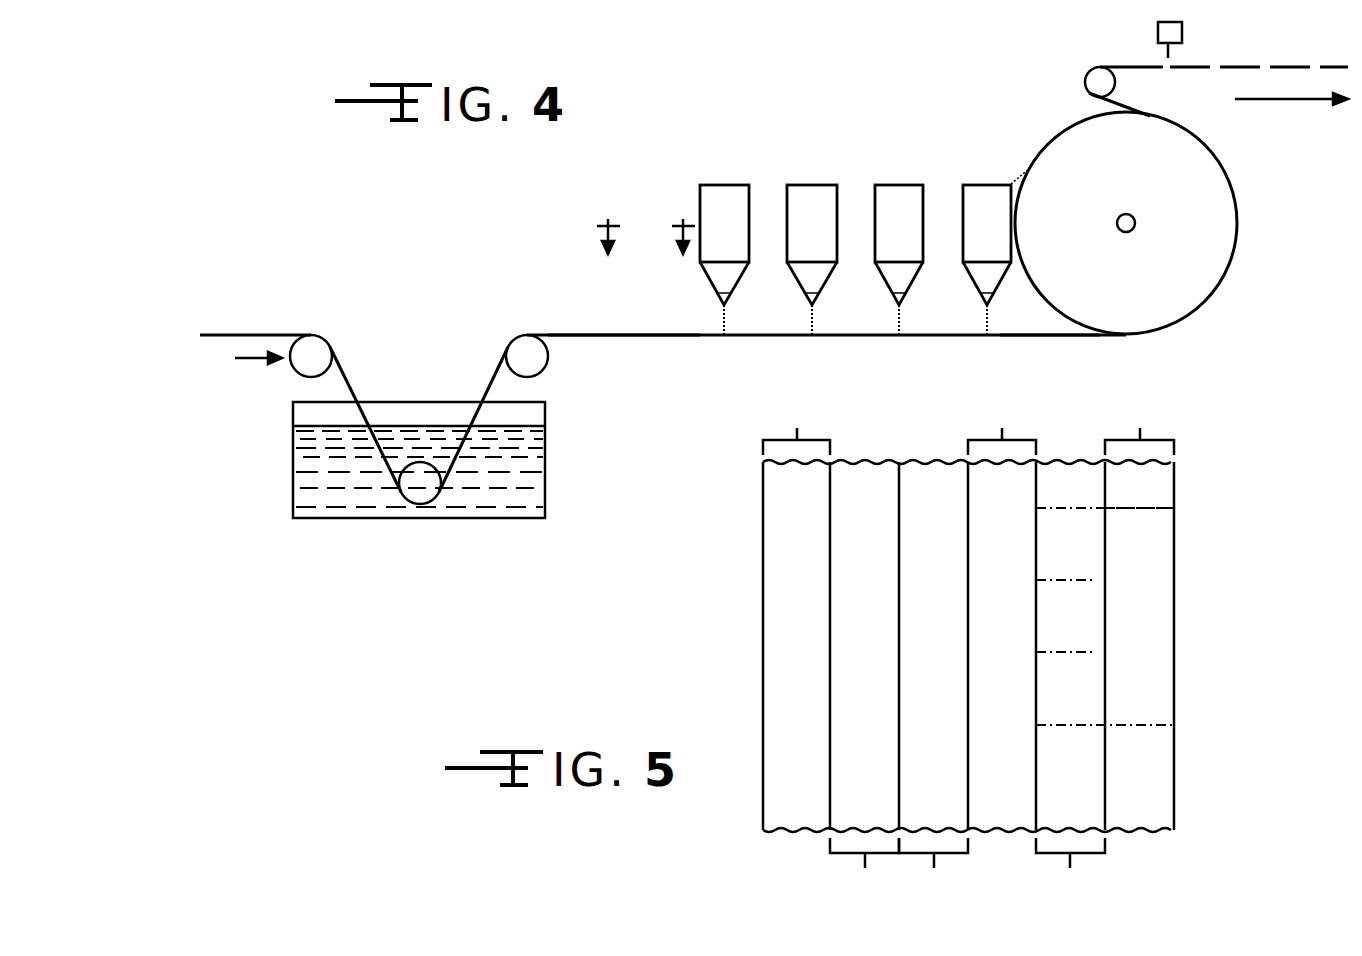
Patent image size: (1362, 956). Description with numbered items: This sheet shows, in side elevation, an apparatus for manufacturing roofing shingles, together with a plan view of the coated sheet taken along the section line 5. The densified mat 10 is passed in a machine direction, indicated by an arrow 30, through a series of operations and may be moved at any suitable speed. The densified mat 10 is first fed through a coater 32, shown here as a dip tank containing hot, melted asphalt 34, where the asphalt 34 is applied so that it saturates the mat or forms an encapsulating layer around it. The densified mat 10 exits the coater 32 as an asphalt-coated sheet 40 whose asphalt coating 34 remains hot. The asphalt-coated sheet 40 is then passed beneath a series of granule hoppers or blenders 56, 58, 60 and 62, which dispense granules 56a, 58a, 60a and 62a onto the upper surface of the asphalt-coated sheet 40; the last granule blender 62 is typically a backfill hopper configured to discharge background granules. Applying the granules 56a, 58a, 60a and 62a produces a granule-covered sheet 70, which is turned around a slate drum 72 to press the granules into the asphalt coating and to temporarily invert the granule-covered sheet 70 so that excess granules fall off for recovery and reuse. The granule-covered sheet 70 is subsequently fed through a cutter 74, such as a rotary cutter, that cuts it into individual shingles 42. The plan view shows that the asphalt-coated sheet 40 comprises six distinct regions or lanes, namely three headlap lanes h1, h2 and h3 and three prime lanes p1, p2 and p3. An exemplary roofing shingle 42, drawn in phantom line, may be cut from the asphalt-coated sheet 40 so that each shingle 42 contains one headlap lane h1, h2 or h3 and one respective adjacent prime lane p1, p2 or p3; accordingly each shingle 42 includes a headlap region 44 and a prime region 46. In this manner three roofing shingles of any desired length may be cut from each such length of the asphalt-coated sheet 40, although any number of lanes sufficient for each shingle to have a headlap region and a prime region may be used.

In FIG. 4, the densified mat 10 is at (291, 335).
In FIG. 4, the arrow 30 is at (252, 360).
In FIG. 4, the coater 32 is at (291, 478).
In FIG. 4, the asphalt 34 is at (527, 500).
In FIG. 4, the asphalt-coated sheet 40 is at (590, 334).
In FIG. 4, the line 5- 5 is at (646, 225).
In FIG. 4, the granule blender 56 is at (723, 185).
In FIG. 4, the granule blender 58 is at (812, 185).
In FIG. 4, the granule blender 60 is at (899, 185).
In FIG. 4, the granule blender 62 is at (980, 185).
In FIG. 4, the granules 56a is at (727, 316).
In FIG. 4, the granules 58a is at (812, 316).
In FIG. 4, the granules 60a is at (899, 316).
In FIG. 4, the granules 62a is at (988, 316).
In FIG. 4, the granule-covered sheet 70 is at (1070, 334).
In FIG. 4, the slate drum 72 is at (1213, 246).
In FIG. 4, the cutter 74 is at (1184, 30).
In FIG. 5, the roofing shingle 42 is at (1180, 581).
In FIG. 5, the headlap region 44 is at (1146, 520).
In FIG. 5, the prime region 46 is at (1063, 520).
In FIG. 5, the headlap lane h1 is at (796, 425).
In FIG. 5, the headlap lane h2 is at (1002, 425).
In FIG. 5, the headlap lane h3 is at (1139, 425).
In FIG. 5, the prime lane p1 is at (864, 866).
In FIG. 5, the prime lane p2 is at (933, 866).
In FIG. 5, the prime lane p3 is at (1070, 866).